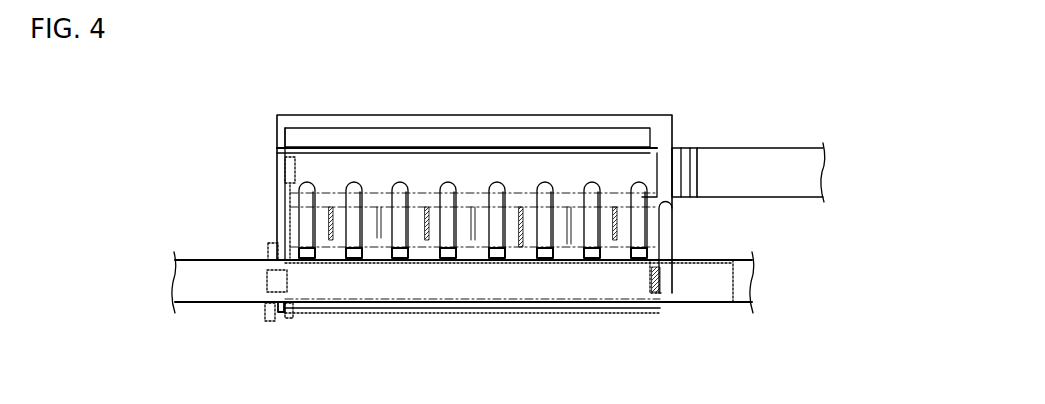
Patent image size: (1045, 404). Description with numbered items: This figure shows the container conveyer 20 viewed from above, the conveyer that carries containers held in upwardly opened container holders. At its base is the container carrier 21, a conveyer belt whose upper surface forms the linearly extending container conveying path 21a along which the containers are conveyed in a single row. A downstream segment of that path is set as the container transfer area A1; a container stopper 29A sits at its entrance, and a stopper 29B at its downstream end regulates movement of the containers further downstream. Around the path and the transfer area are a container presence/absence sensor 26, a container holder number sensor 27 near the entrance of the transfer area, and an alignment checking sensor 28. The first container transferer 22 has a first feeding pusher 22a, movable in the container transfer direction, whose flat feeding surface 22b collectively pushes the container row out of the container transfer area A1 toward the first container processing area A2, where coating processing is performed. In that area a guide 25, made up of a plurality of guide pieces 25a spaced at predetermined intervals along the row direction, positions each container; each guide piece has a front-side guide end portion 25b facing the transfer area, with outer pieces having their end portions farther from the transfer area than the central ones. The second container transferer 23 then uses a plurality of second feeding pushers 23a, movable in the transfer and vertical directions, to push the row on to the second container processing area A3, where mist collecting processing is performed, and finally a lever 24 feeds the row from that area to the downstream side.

The container conveyer 20 is at (227, 80).
The container carrier 21 is at (208, 272).
The container conveying path 21a is at (207, 288).
The first container transferer 22 is at (472, 332).
The first feeding pusher 22a is at (522, 308).
The feeding surface 22b is at (502, 296).
The second container transferer 23 is at (473, 149).
The second feeding pusher 23a is at (407, 257).
The lever 24 is at (282, 166).
The guide 25 is at (473, 205).
The guide piece 25a is at (568, 207).
The front-side guide end portion 25b is at (522, 249).
The container presence/absence sensor 26 is at (265, 281).
The container holder number sensor 27 is at (271, 318).
The alignment checking sensor 28 is at (288, 317).
The container stopper 29A is at (268, 250).
The stopper 29B is at (656, 292).
The container transfer area A1 is at (448, 283).
The first container processing area A2 is at (294, 211).
The second container processing area A3 is at (313, 162).